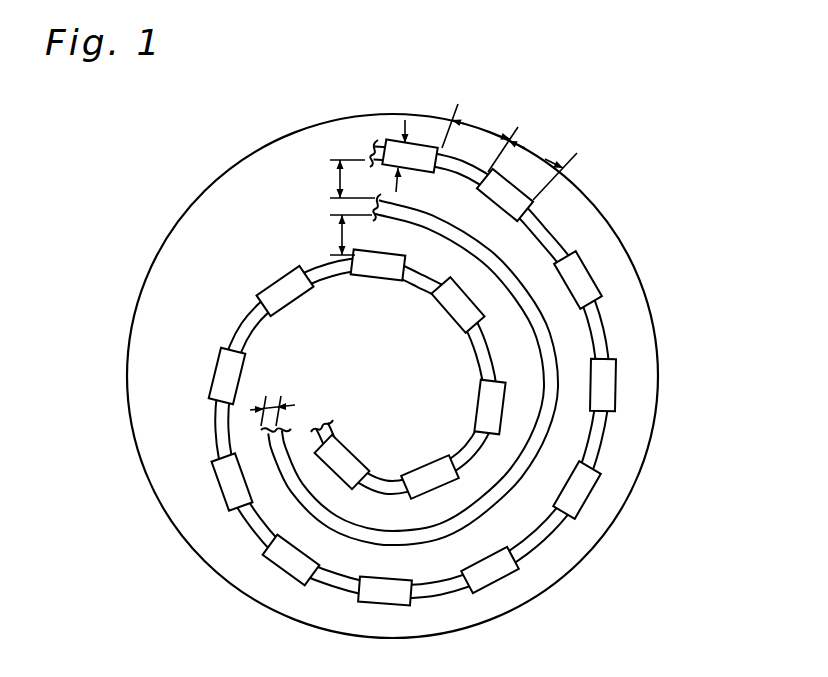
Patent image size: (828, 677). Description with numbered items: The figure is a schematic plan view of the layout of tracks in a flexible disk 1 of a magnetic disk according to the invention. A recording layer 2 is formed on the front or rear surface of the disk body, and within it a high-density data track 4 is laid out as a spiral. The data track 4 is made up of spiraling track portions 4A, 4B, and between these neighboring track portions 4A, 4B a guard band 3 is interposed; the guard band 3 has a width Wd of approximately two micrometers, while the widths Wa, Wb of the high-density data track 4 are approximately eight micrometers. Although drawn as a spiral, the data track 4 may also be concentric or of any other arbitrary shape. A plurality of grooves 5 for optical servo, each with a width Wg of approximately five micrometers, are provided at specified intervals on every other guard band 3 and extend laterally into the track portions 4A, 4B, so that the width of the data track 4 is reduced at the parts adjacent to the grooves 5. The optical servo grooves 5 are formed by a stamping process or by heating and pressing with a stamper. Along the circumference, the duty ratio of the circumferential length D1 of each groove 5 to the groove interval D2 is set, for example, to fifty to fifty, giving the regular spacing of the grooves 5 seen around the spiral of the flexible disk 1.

The flexible disk 1 is at (170, 236).
The recording layer 2 is at (130, 366).
The guard band 3 is at (467, 458).
The data track 4 is at (467, 367).
The track portion 4A is at (543, 260).
The track portion 4B is at (533, 418).
The grooves for optical servo 5 is at (608, 390).
The width of data track Wa is at (326, 181).
The width of data track Wb is at (324, 231).
The width of guard band Wd is at (275, 389).
The width of groove Wg is at (403, 152).
The circumferential length of groove D1 is at (543, 164).
The groove interval D2 is at (480, 137).